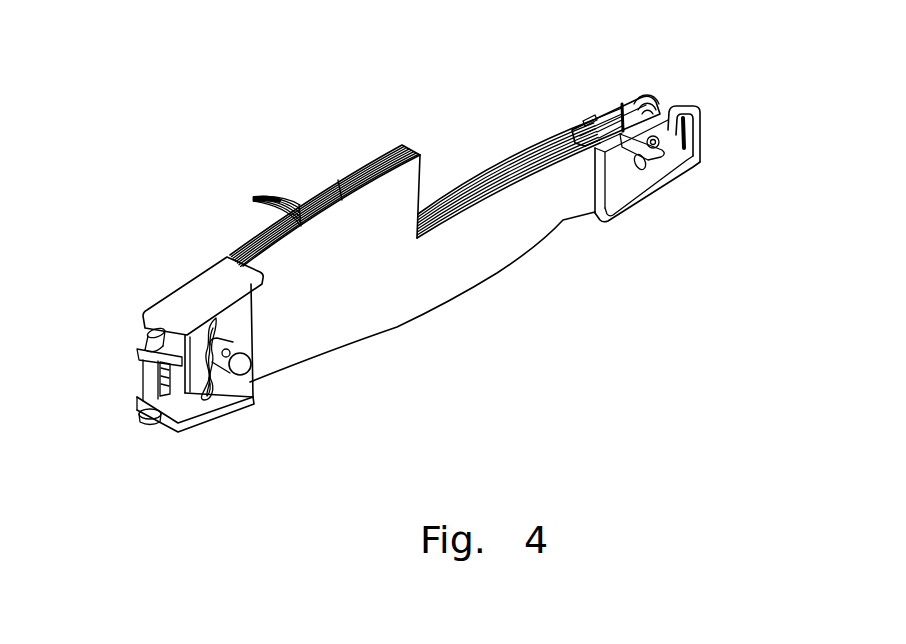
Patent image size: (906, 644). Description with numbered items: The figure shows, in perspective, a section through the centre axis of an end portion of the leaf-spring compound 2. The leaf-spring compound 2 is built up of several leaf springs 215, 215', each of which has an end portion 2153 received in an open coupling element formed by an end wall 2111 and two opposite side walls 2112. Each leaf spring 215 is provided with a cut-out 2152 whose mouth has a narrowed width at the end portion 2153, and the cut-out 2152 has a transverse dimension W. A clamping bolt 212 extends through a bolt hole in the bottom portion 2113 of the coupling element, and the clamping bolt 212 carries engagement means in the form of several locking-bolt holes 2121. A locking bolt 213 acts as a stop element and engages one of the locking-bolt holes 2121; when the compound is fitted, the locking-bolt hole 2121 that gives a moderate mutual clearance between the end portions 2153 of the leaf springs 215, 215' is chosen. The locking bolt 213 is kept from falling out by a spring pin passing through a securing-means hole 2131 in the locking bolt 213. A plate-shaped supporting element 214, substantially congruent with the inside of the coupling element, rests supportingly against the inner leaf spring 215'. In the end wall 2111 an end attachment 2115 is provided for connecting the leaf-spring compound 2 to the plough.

The leaf-spring compound 2 is at (230, 106).
The leaf spring 215 is at (313, 205).
The inner leaf spring 215' is at (415, 173).
The bottom portion 2113 is at (573, 140).
The end portion 2153 is at (593, 121).
The transverse dimension W is at (640, 97).
The cut-out 2152 is at (651, 90).
The securing-means hole 2131 is at (657, 115).
The end wall 2111 is at (705, 135).
The locking-bolt hole 2121 is at (688, 141).
The clamping bolt 212 is at (652, 135).
The locking bolt 213 is at (641, 146).
The side wall 2112 is at (613, 180).
The supporting element 214 is at (632, 216).
The end attachment 2115 is at (136, 340).